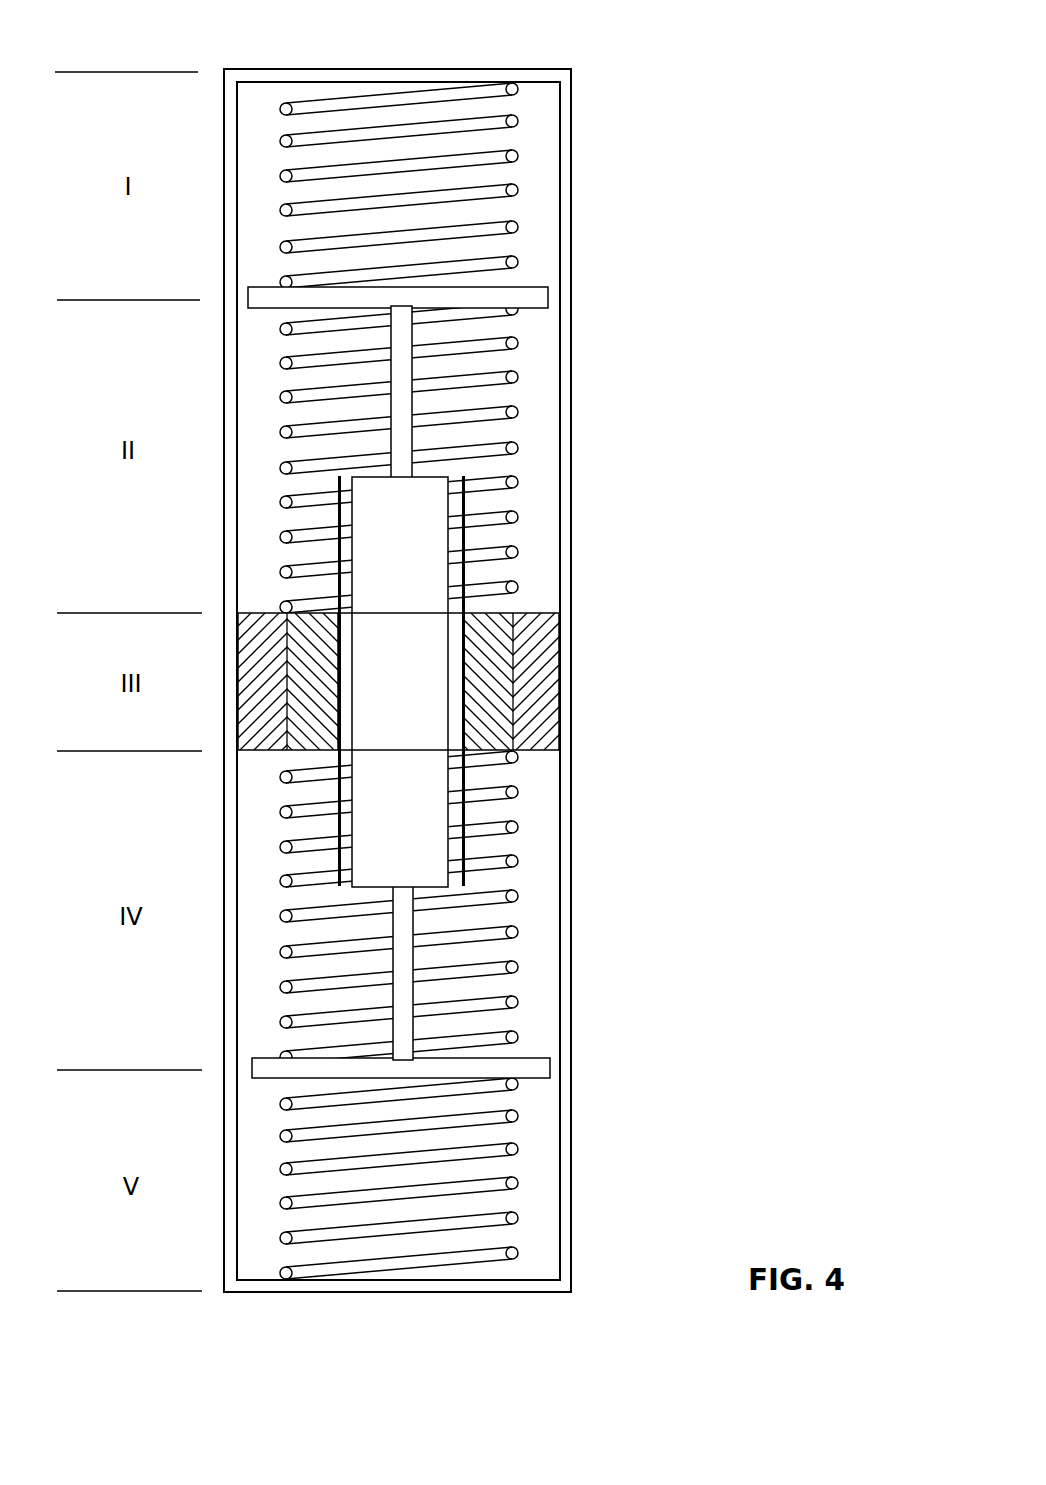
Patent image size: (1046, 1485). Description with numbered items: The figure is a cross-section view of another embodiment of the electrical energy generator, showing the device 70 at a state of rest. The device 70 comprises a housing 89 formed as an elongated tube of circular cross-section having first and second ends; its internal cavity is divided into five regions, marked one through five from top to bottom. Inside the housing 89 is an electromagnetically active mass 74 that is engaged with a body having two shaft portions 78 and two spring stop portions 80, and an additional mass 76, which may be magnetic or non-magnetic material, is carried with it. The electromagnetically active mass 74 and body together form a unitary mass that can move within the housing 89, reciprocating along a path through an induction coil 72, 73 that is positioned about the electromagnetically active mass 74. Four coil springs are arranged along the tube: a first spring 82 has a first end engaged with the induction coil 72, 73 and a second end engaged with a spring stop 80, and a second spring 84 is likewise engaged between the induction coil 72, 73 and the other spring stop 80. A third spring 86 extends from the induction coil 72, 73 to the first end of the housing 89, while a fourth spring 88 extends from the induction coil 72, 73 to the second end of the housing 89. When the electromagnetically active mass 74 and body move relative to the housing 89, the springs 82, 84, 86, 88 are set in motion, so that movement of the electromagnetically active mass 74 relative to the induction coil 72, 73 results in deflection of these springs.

The device 70 is at (634, 90).
The induction coil 72 is at (493, 643).
The induction coil 73 is at (535, 723).
The electromagnetically active mass 74 is at (410, 682).
The additional mass 76 is at (409, 520).
The shaft portions 78 is at (403, 403).
The spring stop portions 80 is at (533, 295).
The first spring 82 is at (490, 345).
The second spring 84 is at (493, 1005).
The third spring 86 is at (488, 193).
The fourth spring 88 is at (495, 1152).
The housing 89 is at (535, 1286).